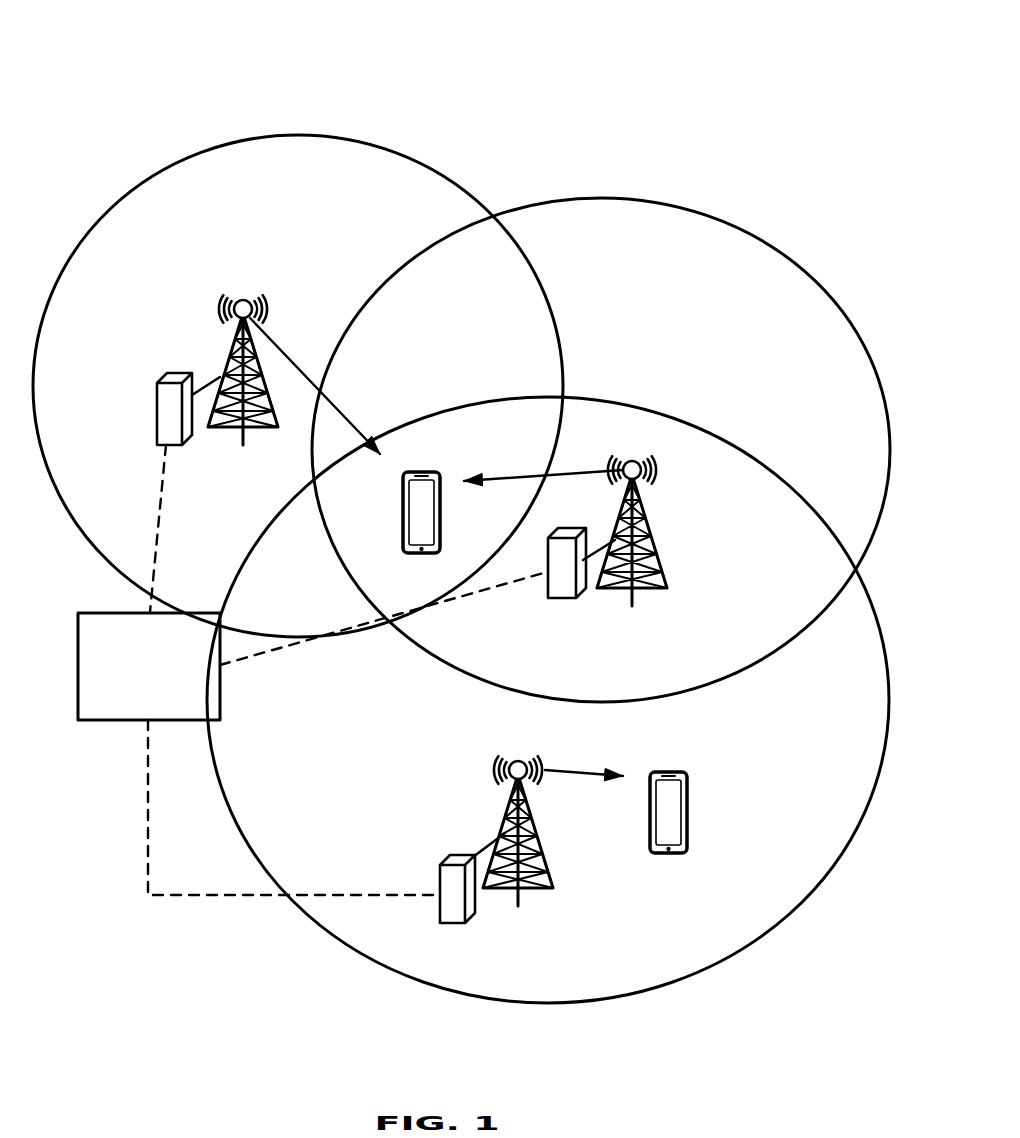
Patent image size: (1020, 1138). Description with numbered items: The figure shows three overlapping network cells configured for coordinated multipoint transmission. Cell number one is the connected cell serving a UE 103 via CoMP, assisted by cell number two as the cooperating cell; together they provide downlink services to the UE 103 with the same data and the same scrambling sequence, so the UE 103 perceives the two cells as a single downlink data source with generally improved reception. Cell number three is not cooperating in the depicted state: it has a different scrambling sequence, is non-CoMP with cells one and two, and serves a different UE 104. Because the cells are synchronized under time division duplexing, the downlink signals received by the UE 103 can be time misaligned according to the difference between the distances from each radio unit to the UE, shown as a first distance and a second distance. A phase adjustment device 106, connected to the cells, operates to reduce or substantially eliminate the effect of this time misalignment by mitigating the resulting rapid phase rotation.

The UE 103 is at (420, 510).
The UE 104 is at (665, 810).
The phase adjustment device 106 is at (85, 702).